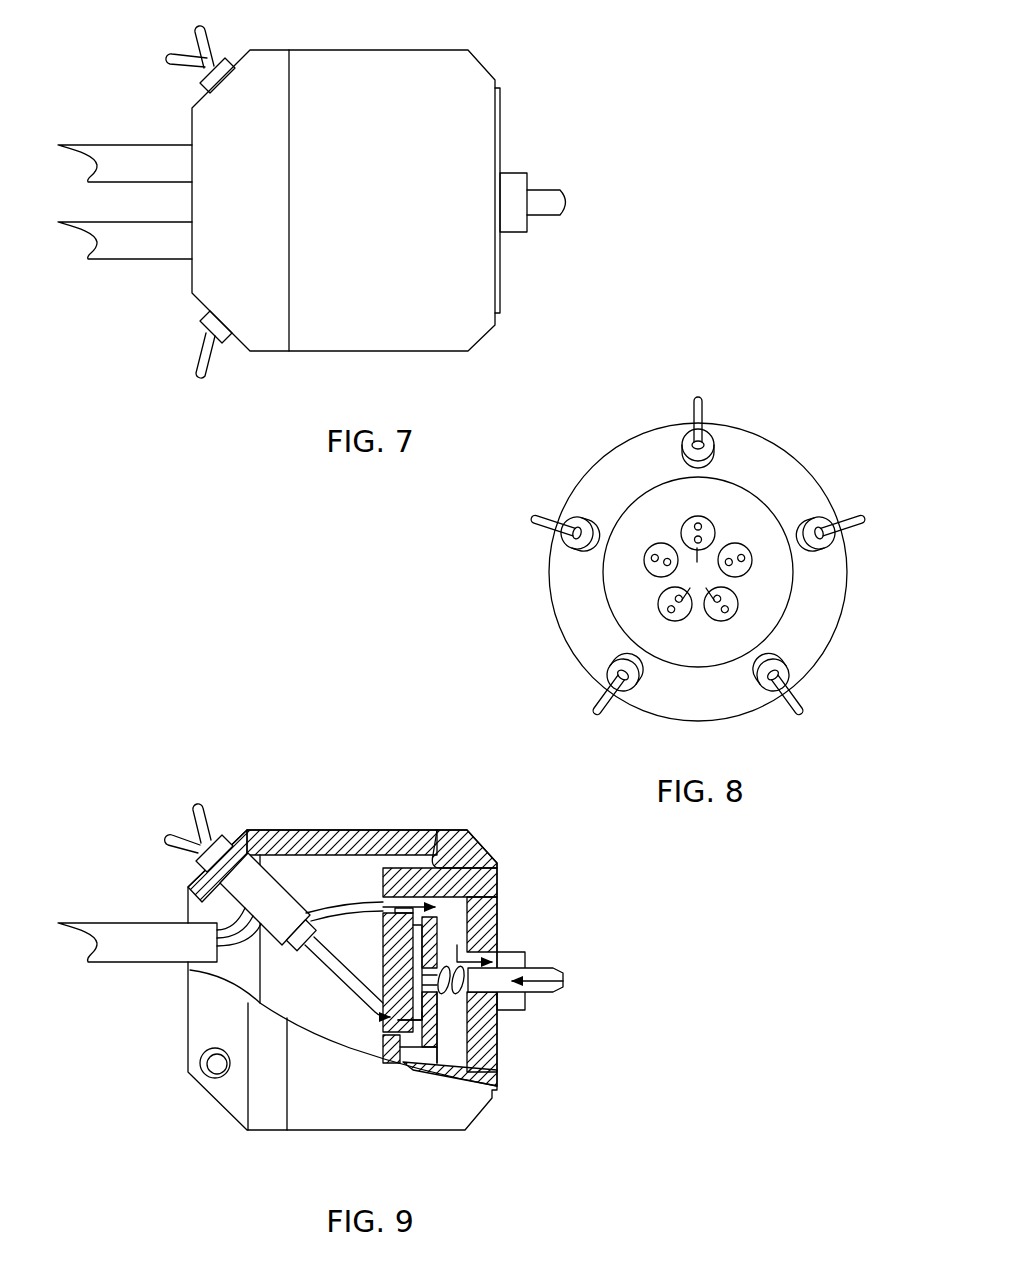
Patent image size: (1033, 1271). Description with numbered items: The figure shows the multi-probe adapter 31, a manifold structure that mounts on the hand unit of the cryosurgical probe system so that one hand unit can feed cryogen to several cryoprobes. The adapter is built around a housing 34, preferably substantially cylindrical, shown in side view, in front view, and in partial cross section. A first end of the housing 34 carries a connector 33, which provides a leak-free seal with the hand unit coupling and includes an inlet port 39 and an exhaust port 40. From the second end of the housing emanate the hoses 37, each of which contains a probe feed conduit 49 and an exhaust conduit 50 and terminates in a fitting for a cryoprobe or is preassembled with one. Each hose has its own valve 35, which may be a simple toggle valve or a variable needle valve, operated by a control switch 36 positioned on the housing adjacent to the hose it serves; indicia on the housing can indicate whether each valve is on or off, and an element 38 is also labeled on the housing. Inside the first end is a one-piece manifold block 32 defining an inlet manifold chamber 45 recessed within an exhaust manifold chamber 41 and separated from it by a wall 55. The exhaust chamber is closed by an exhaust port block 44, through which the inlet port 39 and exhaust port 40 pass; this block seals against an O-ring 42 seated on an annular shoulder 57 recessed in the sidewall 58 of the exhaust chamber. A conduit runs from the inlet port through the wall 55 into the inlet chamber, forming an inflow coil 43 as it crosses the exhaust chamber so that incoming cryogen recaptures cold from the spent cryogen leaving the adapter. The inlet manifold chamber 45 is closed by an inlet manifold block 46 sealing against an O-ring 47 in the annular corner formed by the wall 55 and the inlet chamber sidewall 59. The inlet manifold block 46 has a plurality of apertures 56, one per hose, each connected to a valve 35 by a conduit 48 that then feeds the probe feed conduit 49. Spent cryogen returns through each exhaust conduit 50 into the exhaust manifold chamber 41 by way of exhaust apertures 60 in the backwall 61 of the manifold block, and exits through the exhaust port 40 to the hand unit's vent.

In FIG. 7, the multi-probe adapter 31 is at (540, 92).
In FIG. 8, the multi-probe adapter 31 is at (797, 408).
In FIG. 9, the multi-probe adapter 31 is at (390, 800).
In FIG. 9, the manifold block 32 is at (497, 868).
In FIG. 7, the connector 33 is at (533, 240).
In FIG. 9, the connector 33 is at (545, 977).
In FIG. 7, the housing 34 is at (432, 343).
In FIG. 9, the housing 34 is at (326, 830).
In FIG. 9, the valve 35 is at (266, 948).
In FIG. 7, the control switch 36 is at (178, 58).
In FIG. 8, the control switch 36 is at (700, 398).
In FIG. 9, the control switch 36 is at (205, 812).
In FIG. 7, the hose 37 is at (150, 178).
In FIG. 8, the hose 37 is at (690, 527).
In FIG. 9, the hose 37 is at (142, 963).
In FIG. 7, the housing 38 is at (270, 345).
In FIG. 8, the housing 38 is at (804, 486).
In FIG. 9, the housing 38 is at (207, 1013).
In FIG. 7, the inlet port 39 is at (572, 202).
In FIG. 9, the inlet port 39 is at (566, 978).
In FIG. 9, the exhaust port 40 is at (527, 954).
In FIG. 9, the exhaust manifold chamber 41 is at (458, 1043).
In FIG. 9, the O-ring 42 is at (470, 1080).
In FIG. 9, the inflow coil 43 is at (503, 1008).
In FIG. 9, the exhaust port block 44 is at (490, 1058).
In FIG. 9, the inlet manifold chamber 45 is at (418, 945).
In FIG. 9, the inlet manifold block 46 is at (383, 966).
In FIG. 9, the O-ring 47 is at (400, 1066).
In FIG. 9, the conduit 48 is at (328, 973).
In FIG. 8, the probe feed conduit 49 is at (700, 574).
In FIG. 9, the probe feed conduit 49 is at (232, 948).
In FIG. 8, the exhaust conduit 50 is at (712, 533).
In FIG. 9, the exhaust conduit 50 is at (313, 913).
In FIG. 9, the wall 55 is at (447, 982).
In FIG. 9, the aperture 56 is at (383, 1024).
In FIG. 9, the annular shoulder 57 is at (497, 900).
In FIG. 9, the sidewall 58 is at (447, 850).
In FIG. 9, the sidewall 59 is at (383, 932).
In FIG. 9, the exhaust aperture 60 is at (386, 902).
In FIG. 9, the backwall 61 is at (385, 1052).